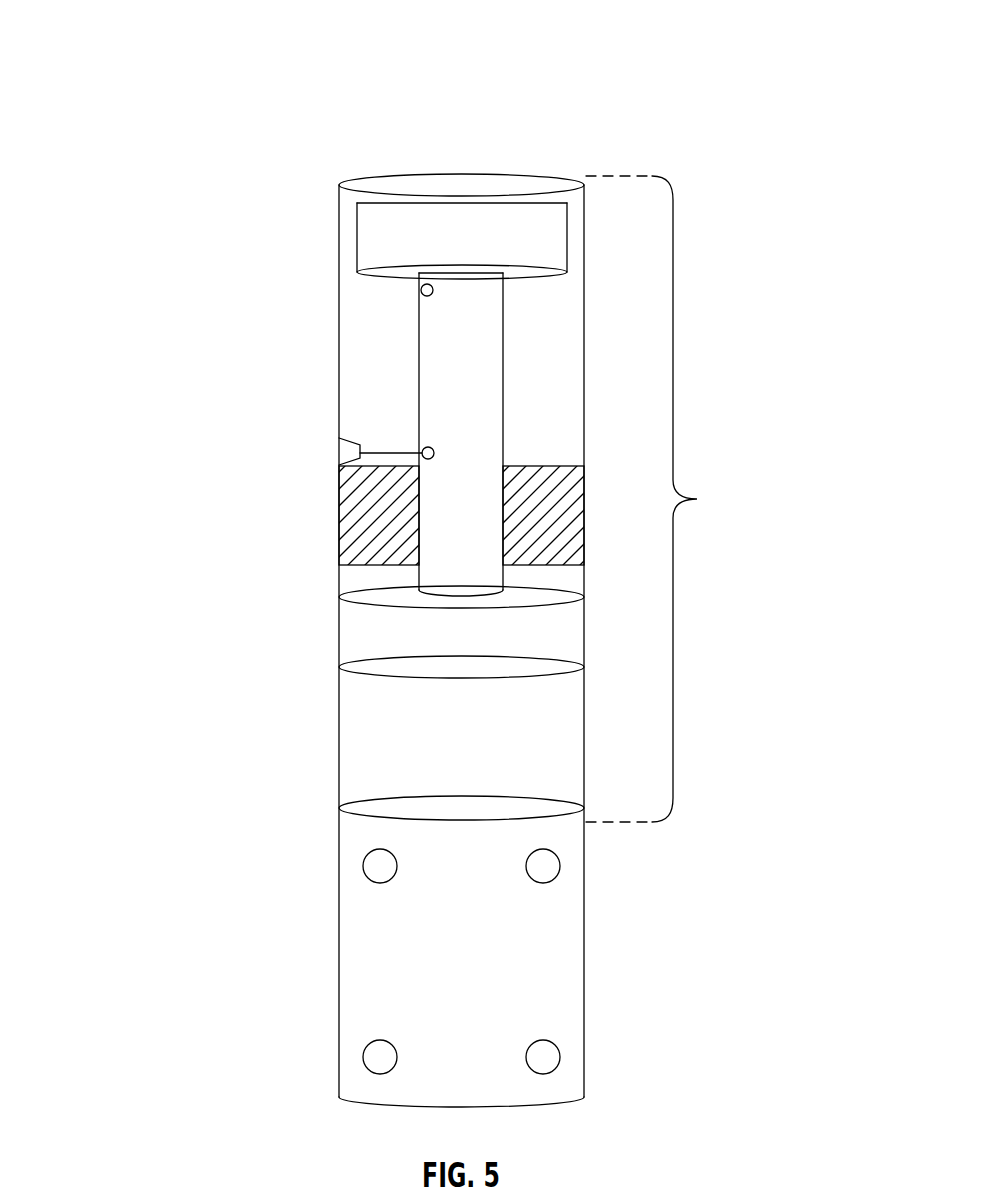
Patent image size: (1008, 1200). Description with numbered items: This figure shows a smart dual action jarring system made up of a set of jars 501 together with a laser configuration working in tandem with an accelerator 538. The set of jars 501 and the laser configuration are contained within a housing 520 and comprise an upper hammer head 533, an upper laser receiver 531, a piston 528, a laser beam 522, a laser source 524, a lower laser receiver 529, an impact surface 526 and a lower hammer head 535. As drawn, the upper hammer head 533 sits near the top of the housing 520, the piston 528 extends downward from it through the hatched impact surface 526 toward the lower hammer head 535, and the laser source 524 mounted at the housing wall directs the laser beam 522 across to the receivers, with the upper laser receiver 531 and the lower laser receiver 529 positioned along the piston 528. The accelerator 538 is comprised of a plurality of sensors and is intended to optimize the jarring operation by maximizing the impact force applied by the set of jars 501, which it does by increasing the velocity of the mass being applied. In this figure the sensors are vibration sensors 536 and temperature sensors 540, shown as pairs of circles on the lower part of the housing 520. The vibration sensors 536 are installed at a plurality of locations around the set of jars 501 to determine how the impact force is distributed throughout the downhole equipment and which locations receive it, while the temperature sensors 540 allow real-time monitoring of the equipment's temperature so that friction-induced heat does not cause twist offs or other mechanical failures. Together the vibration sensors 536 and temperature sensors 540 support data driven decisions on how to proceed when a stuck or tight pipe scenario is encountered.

The set of jars 501 is at (684, 499).
The housing 520 is at (339, 756).
The laser beam 522 is at (366, 451).
The laser source 524 is at (339, 453).
The impact surface 526 is at (368, 570).
The piston 528 is at (433, 360).
The lower laser receiver 529 is at (422, 458).
The upper laser receiver 531 is at (423, 286).
The upper hammer head 533 is at (420, 222).
The lower hammer head 535 is at (367, 643).
The vibration sensor 536 is at (621, 896).
The accelerator 538 is at (398, 924).
The temperature sensor 540 is at (621, 1088).